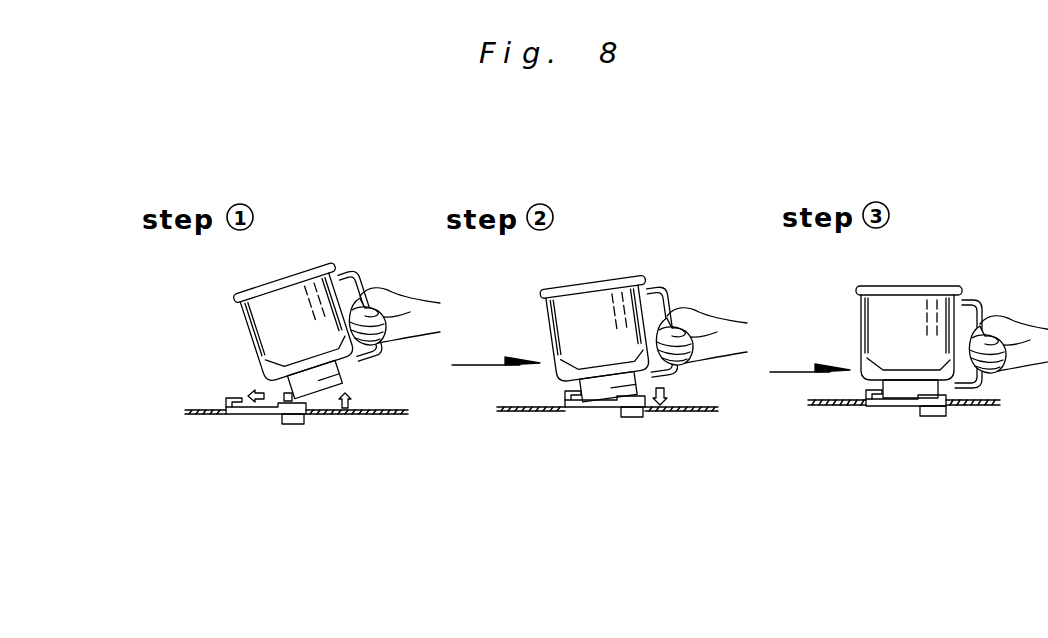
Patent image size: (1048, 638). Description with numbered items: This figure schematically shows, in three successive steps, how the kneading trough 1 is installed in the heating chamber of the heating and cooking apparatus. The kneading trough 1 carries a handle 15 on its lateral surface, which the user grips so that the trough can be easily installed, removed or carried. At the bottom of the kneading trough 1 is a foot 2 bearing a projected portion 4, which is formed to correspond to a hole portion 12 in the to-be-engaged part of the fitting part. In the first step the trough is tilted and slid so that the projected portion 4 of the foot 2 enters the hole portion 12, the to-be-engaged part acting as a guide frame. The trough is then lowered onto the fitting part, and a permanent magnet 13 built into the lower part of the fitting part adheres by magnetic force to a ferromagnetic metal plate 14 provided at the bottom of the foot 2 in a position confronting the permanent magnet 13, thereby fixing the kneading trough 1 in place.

The kneading trough 1 is at (260, 313).
The foot 2 is at (900, 390).
The projected portion 4 is at (287, 403).
The hole portion 12 is at (228, 397).
The permanent magnet 13 is at (293, 420).
The metal plate 14 is at (340, 384).
The handle 15 is at (368, 364).